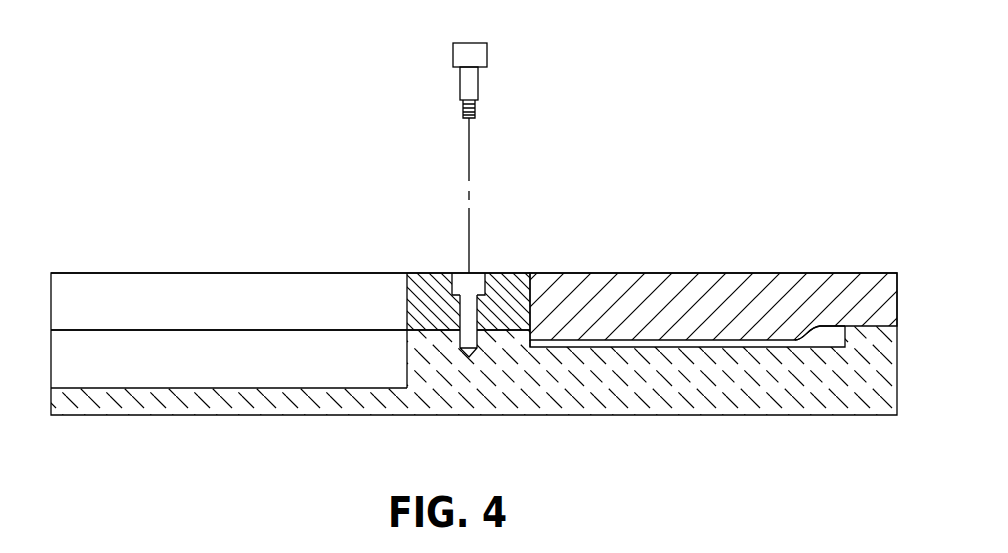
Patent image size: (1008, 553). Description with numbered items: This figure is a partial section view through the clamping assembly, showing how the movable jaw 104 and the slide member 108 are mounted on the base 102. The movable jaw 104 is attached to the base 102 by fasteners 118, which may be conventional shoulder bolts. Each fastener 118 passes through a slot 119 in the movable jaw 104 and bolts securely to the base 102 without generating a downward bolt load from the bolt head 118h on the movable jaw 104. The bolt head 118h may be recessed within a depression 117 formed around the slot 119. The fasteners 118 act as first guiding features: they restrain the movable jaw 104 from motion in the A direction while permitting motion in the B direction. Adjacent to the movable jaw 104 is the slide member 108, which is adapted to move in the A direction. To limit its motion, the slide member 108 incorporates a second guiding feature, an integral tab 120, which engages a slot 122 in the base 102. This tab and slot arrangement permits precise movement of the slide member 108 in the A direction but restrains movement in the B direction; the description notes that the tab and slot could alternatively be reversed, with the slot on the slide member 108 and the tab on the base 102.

The base 102 is at (470, 410).
The movable jaw 104 is at (426, 280).
The slide member 108 is at (676, 280).
The depression 117 is at (457, 273).
The fastener 118 is at (460, 81).
The bolt head 118h is at (487, 46).
The slot 119 is at (479, 273).
The integral tab 120 is at (814, 330).
The slot 122 is at (832, 345).